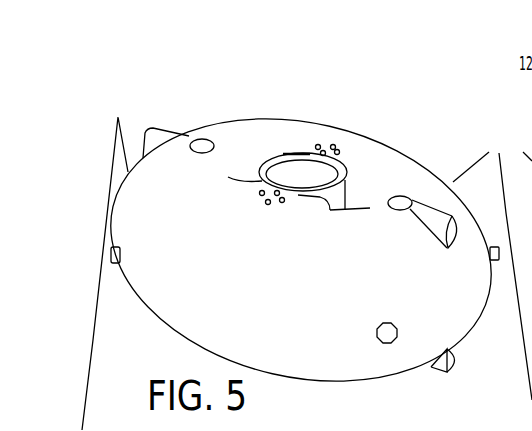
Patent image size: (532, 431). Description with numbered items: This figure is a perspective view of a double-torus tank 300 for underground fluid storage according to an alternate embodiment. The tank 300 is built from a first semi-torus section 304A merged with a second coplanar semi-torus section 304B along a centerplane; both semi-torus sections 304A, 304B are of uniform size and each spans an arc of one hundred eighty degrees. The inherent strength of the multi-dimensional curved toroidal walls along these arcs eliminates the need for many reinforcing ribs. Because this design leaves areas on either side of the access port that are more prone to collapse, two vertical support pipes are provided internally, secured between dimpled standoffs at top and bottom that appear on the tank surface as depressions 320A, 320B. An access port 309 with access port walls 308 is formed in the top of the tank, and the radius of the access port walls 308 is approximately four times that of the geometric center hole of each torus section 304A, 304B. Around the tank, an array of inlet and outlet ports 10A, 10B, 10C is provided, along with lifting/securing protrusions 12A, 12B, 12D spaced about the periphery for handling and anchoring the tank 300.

The double-torus tank 300 is at (218, 88).
The first semi-torus section 304A is at (110, 260).
The second coplanar semi-torus section 304B is at (492, 266).
The inlet and outlet port 10A is at (165, 132).
The inlet and outlet port 10B is at (440, 223).
The inlet and outlet port 10C is at (440, 363).
The lifting/securing protrusion 12A is at (116, 265).
The lifting/securing protrusion 12B is at (392, 342).
The lifting/securing protrusion 12D is at (497, 260).
The access port 309 is at (307, 172).
The access port walls 308 is at (342, 173).
The depression 320A is at (267, 204).
The depression 320B is at (339, 146).